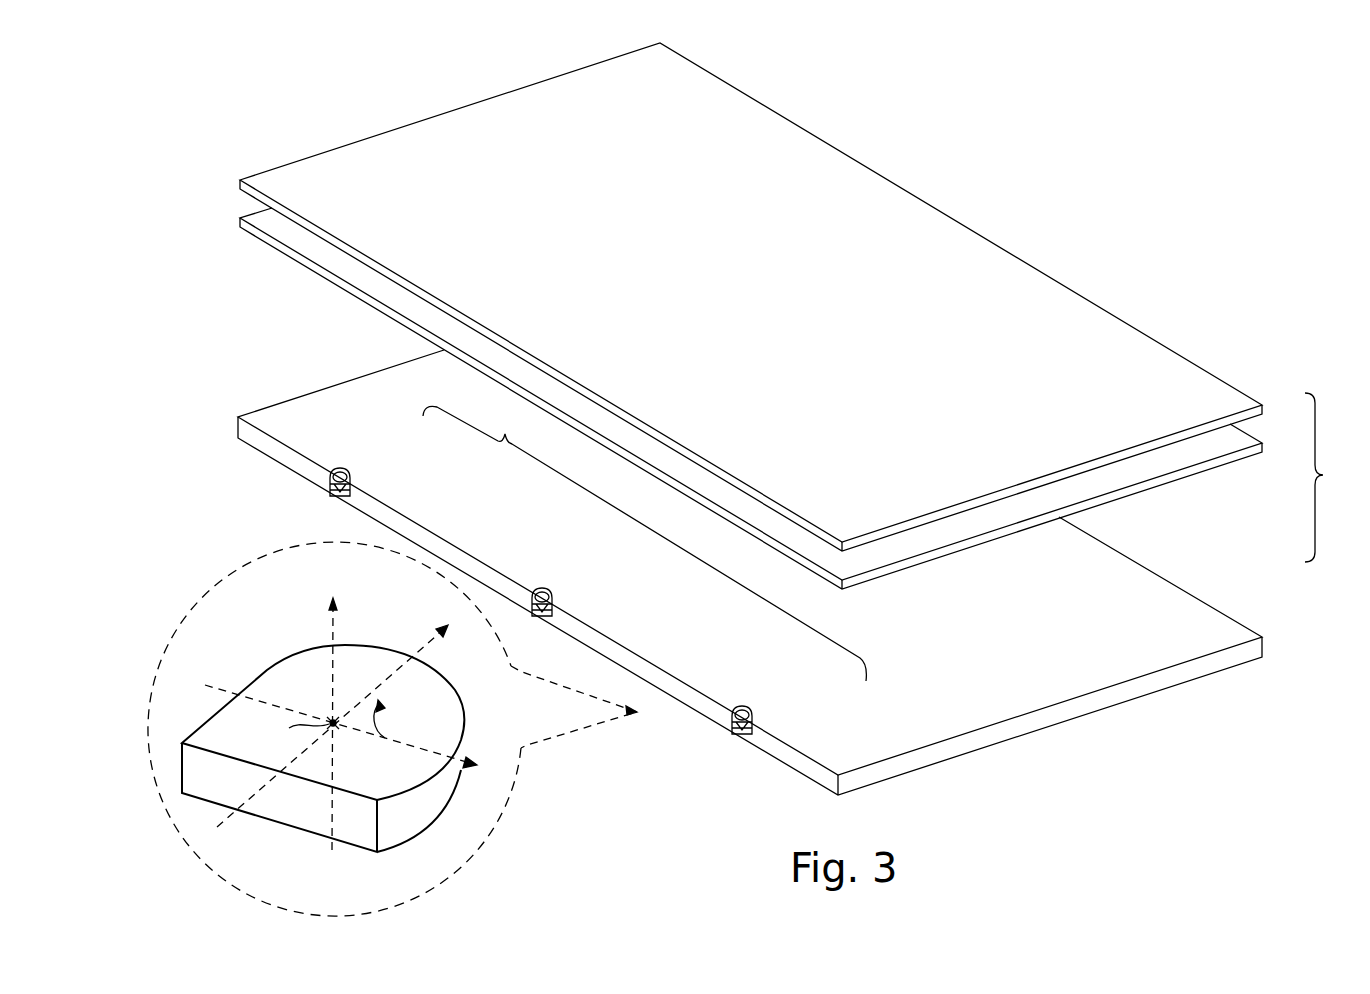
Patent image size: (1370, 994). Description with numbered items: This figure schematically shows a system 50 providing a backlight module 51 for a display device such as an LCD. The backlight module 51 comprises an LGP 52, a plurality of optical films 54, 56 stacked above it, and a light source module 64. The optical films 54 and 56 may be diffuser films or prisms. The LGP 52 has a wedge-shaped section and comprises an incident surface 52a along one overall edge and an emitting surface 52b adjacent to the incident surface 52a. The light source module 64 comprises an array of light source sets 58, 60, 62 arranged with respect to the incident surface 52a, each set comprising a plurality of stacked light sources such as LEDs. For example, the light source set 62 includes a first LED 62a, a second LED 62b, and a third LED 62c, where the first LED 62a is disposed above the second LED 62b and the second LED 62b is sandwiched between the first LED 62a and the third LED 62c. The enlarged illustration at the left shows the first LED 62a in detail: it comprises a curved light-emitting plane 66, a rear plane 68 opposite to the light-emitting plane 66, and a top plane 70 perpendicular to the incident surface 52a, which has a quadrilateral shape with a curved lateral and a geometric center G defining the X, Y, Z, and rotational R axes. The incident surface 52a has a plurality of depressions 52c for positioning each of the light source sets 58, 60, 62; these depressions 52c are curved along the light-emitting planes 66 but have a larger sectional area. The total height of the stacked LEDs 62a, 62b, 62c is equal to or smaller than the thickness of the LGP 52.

The system 50 is at (1048, 185).
The backlight module 51 is at (1330, 475).
The LGP 52 is at (1193, 595).
The incident surface 52a is at (787, 753).
The emitting surface 52b is at (1062, 678).
The depressions 52c is at (757, 710).
The optical film 54 is at (1264, 446).
The optical film 56 is at (1264, 408).
The light source set 58 is at (357, 463).
The light source set 60 is at (557, 584).
The light source set 62 is at (757, 704).
The first LED 62a is at (277, 598).
The second LED 62b is at (733, 720).
The third LED 62c is at (743, 737).
The light source module 64 is at (644, 541).
The light-emitting plane 66 is at (445, 674).
The rear plane 68 is at (297, 820).
The top plane 70 is at (280, 667).